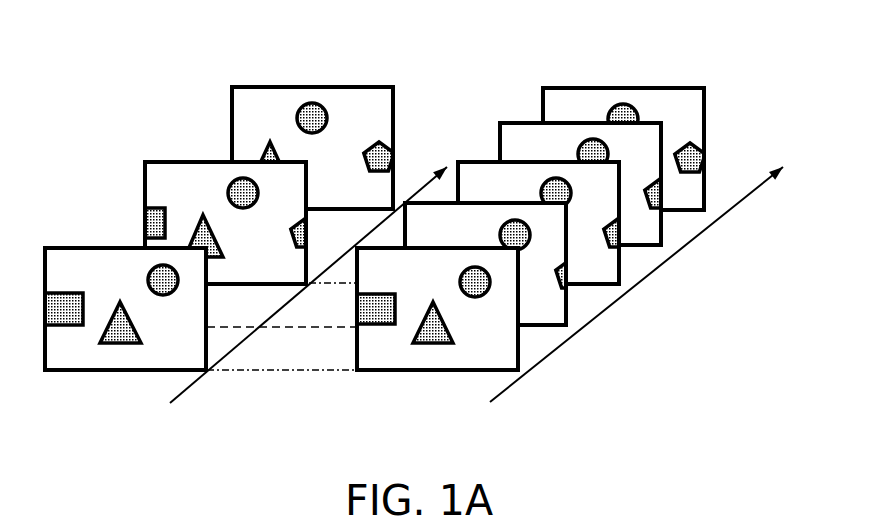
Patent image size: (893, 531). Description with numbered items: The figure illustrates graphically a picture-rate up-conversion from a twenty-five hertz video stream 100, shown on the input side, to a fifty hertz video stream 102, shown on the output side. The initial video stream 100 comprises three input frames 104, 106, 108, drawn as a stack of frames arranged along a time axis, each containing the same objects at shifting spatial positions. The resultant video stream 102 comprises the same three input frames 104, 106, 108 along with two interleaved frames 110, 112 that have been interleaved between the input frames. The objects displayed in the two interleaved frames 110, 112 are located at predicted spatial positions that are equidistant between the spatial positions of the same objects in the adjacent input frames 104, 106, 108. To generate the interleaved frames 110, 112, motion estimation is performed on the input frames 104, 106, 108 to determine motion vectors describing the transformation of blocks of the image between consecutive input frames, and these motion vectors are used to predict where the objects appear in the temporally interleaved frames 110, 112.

The 25 Hz video stream 100 is at (358, 62).
The 50 Hz video stream 102 is at (662, 62).
The input frame 104 is at (110, 372).
The input frame 106 is at (143, 190).
The input frame 108 is at (230, 111).
The interleaved frame 110 is at (568, 302).
The interleaved frame 112 is at (663, 228).